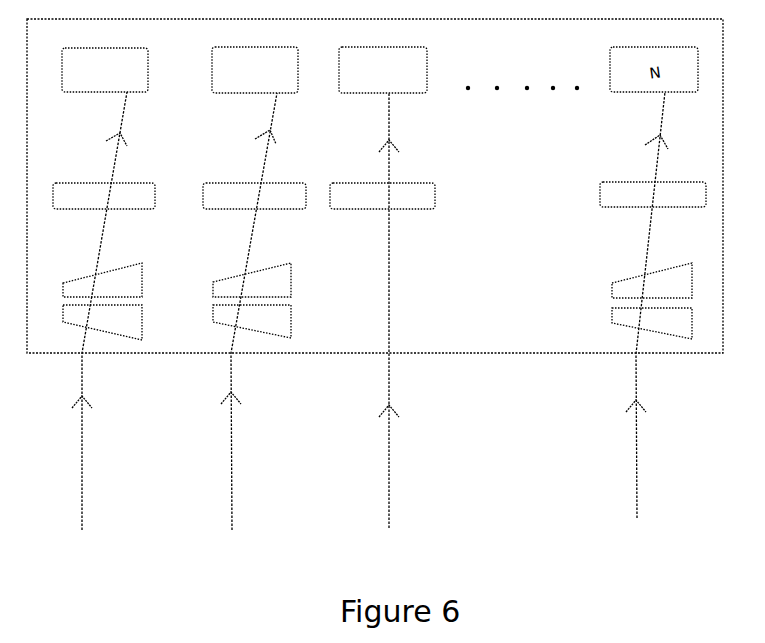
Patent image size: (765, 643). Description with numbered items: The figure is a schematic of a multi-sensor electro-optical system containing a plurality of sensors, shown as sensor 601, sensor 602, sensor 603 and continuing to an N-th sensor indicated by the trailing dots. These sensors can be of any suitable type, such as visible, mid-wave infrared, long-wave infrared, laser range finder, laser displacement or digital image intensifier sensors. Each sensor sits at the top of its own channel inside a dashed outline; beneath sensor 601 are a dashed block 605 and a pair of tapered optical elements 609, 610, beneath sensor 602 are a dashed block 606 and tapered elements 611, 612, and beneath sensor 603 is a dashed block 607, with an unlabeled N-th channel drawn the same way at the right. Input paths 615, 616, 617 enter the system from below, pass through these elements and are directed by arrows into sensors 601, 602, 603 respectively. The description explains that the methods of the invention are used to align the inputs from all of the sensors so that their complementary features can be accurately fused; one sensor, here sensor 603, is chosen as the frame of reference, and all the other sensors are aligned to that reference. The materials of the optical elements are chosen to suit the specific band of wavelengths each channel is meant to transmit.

The sensor 601 is at (121, 80).
The sensor 602 is at (238, 81).
The sensor 603 is at (370, 81).
The first buffer stage 605 is at (121, 205).
The second buffer stage 606 is at (272, 206).
The third buffer stage 607 is at (402, 206).
The first filter element 609 is at (106, 291).
The second filter element 610 is at (106, 330).
The third filter element 611 is at (260, 292).
The fourth filter element 612 is at (253, 330).
The first input signal path 615 is at (96, 332).
The second input signal path 616 is at (246, 332).
The third input signal path 617 is at (393, 331).